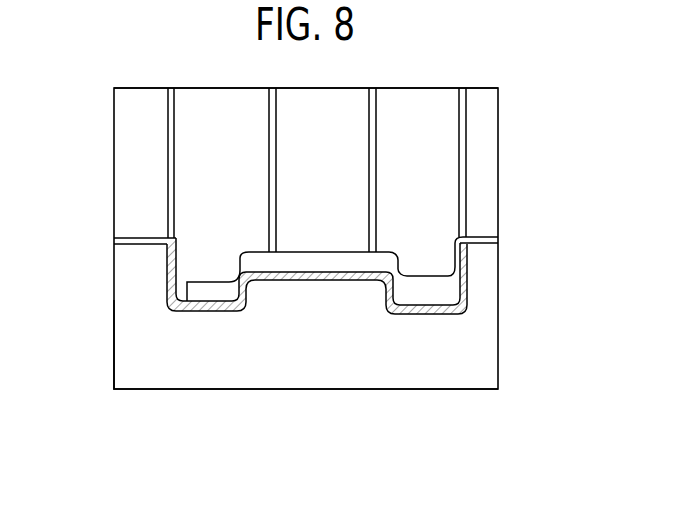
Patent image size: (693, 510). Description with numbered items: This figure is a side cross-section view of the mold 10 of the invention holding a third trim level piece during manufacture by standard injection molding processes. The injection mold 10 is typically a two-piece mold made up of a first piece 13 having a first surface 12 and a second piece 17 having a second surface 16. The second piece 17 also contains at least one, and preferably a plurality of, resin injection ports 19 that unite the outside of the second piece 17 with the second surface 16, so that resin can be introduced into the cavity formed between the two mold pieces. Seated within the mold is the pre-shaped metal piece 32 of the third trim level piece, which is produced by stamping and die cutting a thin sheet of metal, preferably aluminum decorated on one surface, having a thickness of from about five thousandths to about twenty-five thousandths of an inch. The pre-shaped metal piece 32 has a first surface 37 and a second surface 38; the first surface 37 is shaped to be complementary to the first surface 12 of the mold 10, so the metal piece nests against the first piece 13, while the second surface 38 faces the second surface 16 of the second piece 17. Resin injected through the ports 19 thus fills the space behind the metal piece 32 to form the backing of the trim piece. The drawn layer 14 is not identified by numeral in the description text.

The mold 10 is at (499, 209).
The first surface 12 is at (467, 309).
The first piece 13 is at (120, 332).
The conformal layer 14 is at (433, 291).
The second surface 16 is at (177, 292).
The second piece 17 is at (138, 164).
The resin injection ports 19 is at (168, 88).
The pre-shaped metal piece 32 is at (210, 311).
The first surface 37 is at (233, 311).
The second surface 38 is at (317, 272).